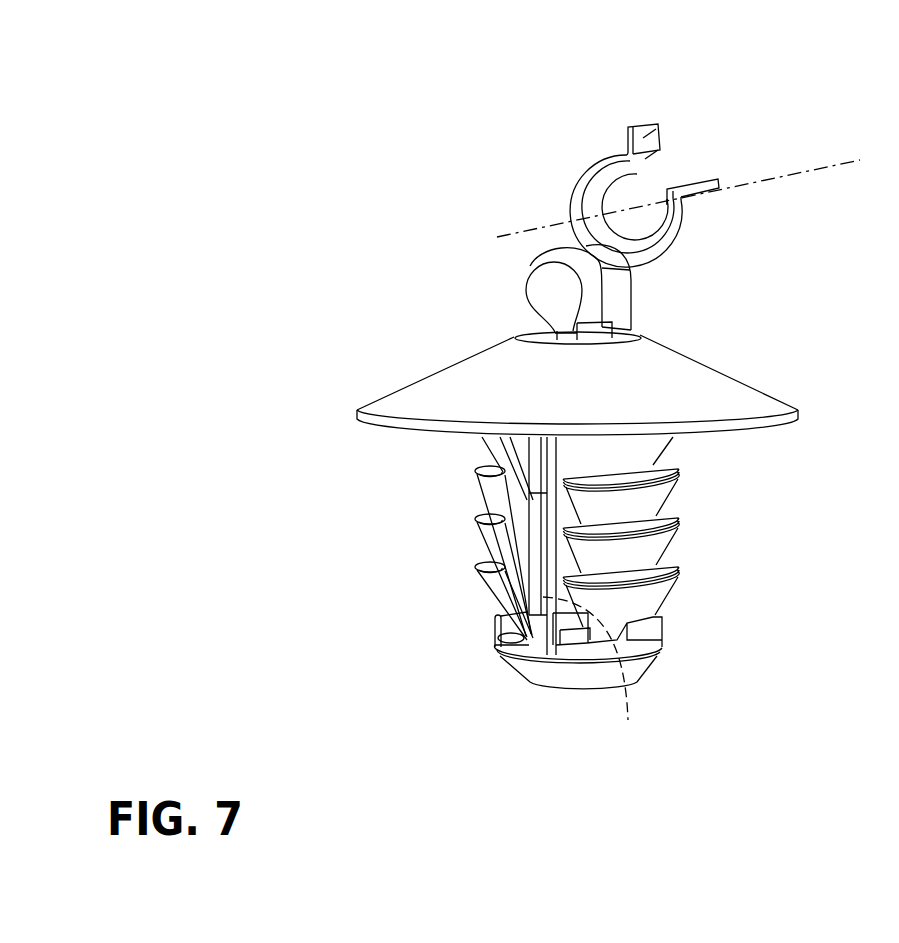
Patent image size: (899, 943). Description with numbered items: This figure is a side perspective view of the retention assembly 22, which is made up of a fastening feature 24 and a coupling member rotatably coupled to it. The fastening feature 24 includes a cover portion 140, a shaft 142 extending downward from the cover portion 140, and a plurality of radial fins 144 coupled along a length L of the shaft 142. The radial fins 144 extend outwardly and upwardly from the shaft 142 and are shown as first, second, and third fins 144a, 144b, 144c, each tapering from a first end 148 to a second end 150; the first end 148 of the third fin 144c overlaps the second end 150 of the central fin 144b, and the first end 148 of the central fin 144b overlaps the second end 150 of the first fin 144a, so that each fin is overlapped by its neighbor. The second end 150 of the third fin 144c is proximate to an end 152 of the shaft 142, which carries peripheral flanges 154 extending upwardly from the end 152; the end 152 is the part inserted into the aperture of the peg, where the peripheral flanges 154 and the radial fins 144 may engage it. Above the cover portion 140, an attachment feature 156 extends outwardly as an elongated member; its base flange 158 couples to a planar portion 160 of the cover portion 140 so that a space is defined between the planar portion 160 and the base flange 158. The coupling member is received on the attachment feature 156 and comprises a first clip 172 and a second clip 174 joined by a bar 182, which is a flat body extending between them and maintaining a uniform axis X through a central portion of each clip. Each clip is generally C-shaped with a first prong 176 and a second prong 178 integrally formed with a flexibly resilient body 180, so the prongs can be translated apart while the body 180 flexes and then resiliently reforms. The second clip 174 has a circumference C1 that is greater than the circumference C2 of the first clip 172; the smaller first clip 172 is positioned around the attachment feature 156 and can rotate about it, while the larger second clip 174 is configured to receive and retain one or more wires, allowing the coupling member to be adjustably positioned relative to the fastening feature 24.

The retention assembly 22 is at (282, 212).
The fastening feature 24 is at (377, 400).
The cover portion 140 is at (723, 398).
The shaft 142 is at (537, 467).
The radial fins 144 is at (480, 477).
The first fin 144a is at (648, 492).
The second fin 144b is at (650, 540).
The third fin 144c is at (645, 595).
The first end 148 is at (490, 562).
The second end 150 is at (500, 645).
The end 152 is at (530, 676).
The peripheral flanges 154 is at (640, 643).
The attachment feature 156 is at (540, 283).
The base flange 158 is at (553, 332).
The planar portion 160 is at (630, 328).
The first clip 172 is at (542, 253).
The second clip 174 is at (571, 217).
The first prong 176 is at (660, 128).
The second prong 178 is at (706, 194).
The body 180 is at (627, 137).
The bar 182 is at (597, 257).
The circumference of the second clip C1 is at (580, 200).
The circumference of the first clip C2 is at (630, 289).
The axis X is at (812, 170).
The length L is at (589, 678).